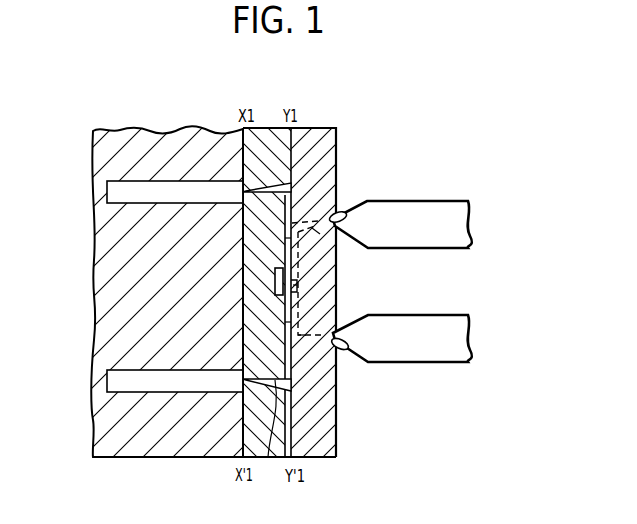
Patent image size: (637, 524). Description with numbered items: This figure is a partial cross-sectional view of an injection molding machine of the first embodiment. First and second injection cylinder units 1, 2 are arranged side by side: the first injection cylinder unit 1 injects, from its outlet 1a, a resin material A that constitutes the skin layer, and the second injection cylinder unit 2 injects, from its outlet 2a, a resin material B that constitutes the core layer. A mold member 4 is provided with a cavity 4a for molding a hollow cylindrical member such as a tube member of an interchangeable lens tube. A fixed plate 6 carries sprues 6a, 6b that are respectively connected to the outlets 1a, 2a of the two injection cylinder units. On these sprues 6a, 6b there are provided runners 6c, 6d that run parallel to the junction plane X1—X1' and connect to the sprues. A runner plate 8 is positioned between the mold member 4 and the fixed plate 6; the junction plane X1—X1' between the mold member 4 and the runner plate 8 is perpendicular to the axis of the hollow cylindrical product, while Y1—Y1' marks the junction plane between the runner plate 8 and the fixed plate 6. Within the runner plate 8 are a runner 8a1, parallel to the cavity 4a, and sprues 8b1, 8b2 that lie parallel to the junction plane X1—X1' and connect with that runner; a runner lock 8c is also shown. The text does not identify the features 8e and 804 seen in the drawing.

The first injection cylinder unit 1 is at (423, 200).
The outlet 1a is at (341, 214).
The second injection cylinder unit 2 is at (428, 364).
The outlet 2a is at (347, 352).
The mold member 4 is at (134, 138).
The cavity 4a is at (113, 193).
The fixed plate 6 is at (322, 128).
The sprue 6a is at (315, 230).
The sprue 6b is at (302, 337).
The runner 6c is at (284, 274).
The runner 6d is at (298, 288).
The runner plate 8 is at (270, 128).
The runner 8a1 is at (278, 190).
The sprue 8b1 is at (285, 243).
The sprue 8b2 is at (288, 372).
The runner lock 8c is at (275, 290).
The slot of movable member 8e is at (285, 322).
The section line reference of movable member 804 is at (268, 457).